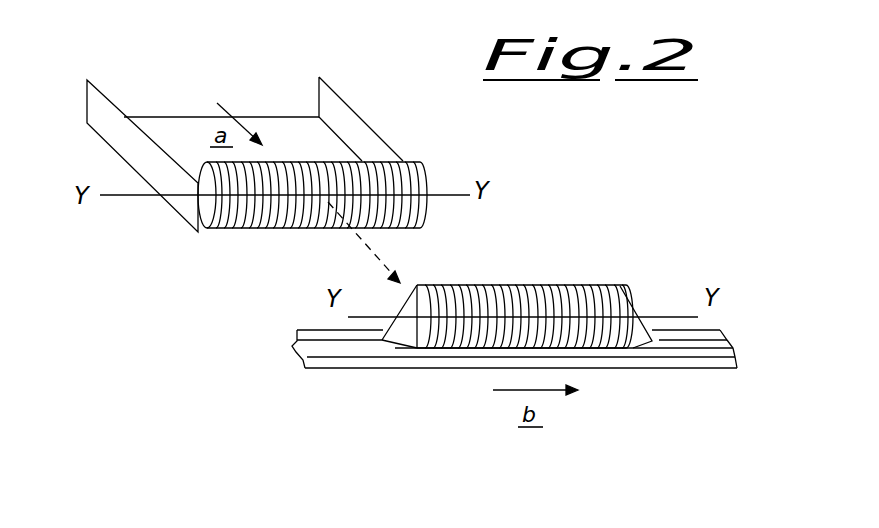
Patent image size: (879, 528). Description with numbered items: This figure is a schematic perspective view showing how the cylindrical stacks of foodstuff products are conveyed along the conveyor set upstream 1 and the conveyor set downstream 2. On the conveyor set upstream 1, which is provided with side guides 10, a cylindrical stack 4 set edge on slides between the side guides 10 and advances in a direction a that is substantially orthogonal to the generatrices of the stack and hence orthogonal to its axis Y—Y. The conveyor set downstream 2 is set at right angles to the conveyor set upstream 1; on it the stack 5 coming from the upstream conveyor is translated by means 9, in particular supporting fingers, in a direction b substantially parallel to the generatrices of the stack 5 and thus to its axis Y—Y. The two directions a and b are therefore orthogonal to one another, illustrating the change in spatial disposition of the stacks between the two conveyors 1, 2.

The conveyor set upstream 1 is at (297, 122).
The conveyor set downstream 2 is at (327, 370).
The cylindrical stack 4 is at (233, 222).
The cylindrical stack 5 is at (547, 295).
The supporting fingers 9 is at (643, 320).
The side guides 10 is at (97, 108).